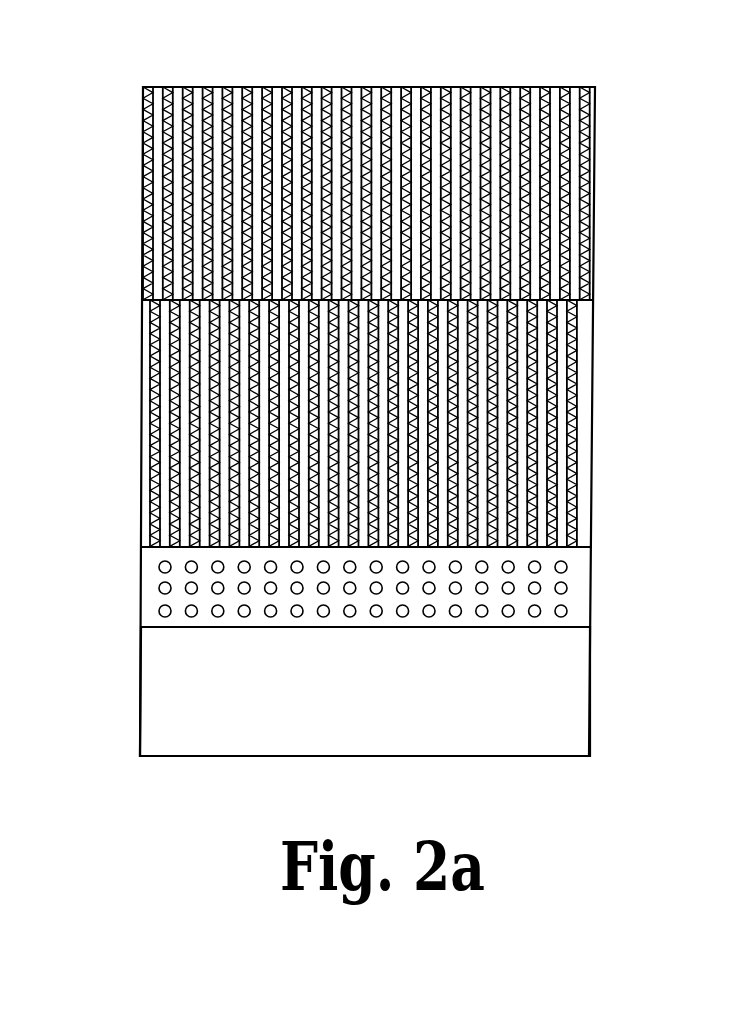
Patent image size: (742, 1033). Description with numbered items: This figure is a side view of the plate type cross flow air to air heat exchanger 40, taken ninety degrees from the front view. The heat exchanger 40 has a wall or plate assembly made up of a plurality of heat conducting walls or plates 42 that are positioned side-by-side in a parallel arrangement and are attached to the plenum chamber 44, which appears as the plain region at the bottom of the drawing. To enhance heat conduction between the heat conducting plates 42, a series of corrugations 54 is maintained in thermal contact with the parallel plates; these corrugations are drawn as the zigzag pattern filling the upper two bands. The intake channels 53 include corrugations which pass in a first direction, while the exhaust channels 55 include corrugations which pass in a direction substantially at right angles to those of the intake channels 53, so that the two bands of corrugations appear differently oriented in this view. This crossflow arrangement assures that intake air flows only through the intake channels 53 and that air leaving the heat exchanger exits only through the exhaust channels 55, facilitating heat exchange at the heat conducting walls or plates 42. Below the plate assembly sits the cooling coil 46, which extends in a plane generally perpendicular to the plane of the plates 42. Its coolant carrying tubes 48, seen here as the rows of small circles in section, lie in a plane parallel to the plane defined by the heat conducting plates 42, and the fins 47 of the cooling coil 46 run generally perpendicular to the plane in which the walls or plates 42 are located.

The heat exchanger 40 is at (604, 204).
The heat conducting plates 42 is at (596, 124).
The plenum chamber 44 is at (577, 700).
The cooling coil 46 is at (373, 570).
The fins 47 is at (143, 594).
The coolant carrying tubes 48 is at (565, 613).
The intake channels 53 is at (580, 388).
The corrugations 54 is at (380, 193).
The exhaust channels 55 is at (143, 189).